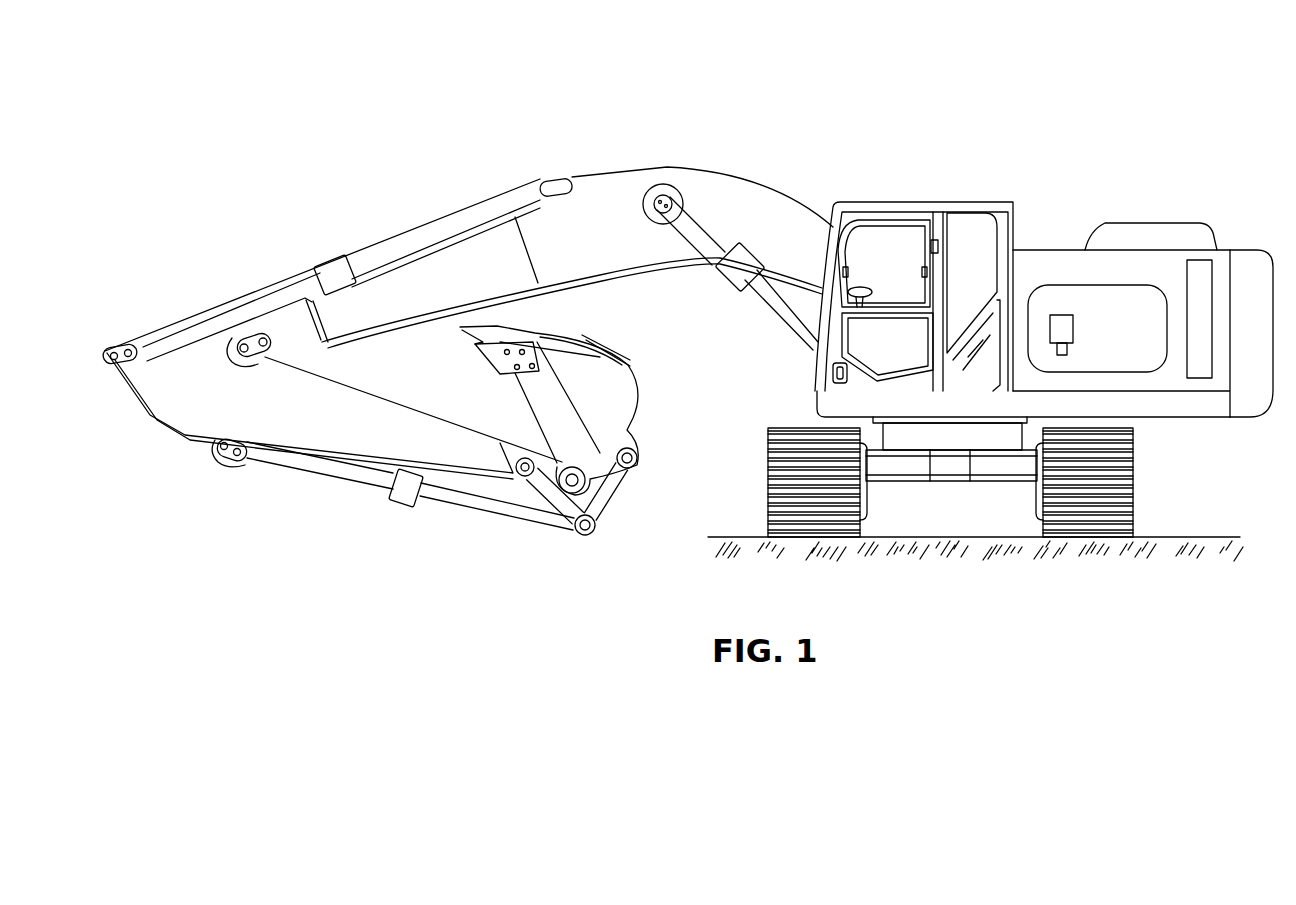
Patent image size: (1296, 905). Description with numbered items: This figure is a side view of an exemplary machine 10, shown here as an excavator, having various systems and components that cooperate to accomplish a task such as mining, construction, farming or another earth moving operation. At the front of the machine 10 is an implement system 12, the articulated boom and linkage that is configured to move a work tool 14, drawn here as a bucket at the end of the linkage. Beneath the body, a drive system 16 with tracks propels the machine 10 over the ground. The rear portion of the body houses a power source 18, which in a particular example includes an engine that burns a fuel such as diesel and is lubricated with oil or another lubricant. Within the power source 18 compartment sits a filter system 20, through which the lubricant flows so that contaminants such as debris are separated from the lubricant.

The machine 10 is at (1145, 82).
The implement system 12 is at (693, 118).
The work tool 14 is at (640, 380).
The drive system 16 is at (1231, 430).
The power source 18 is at (1085, 284).
The filter system 20 is at (1075, 330).